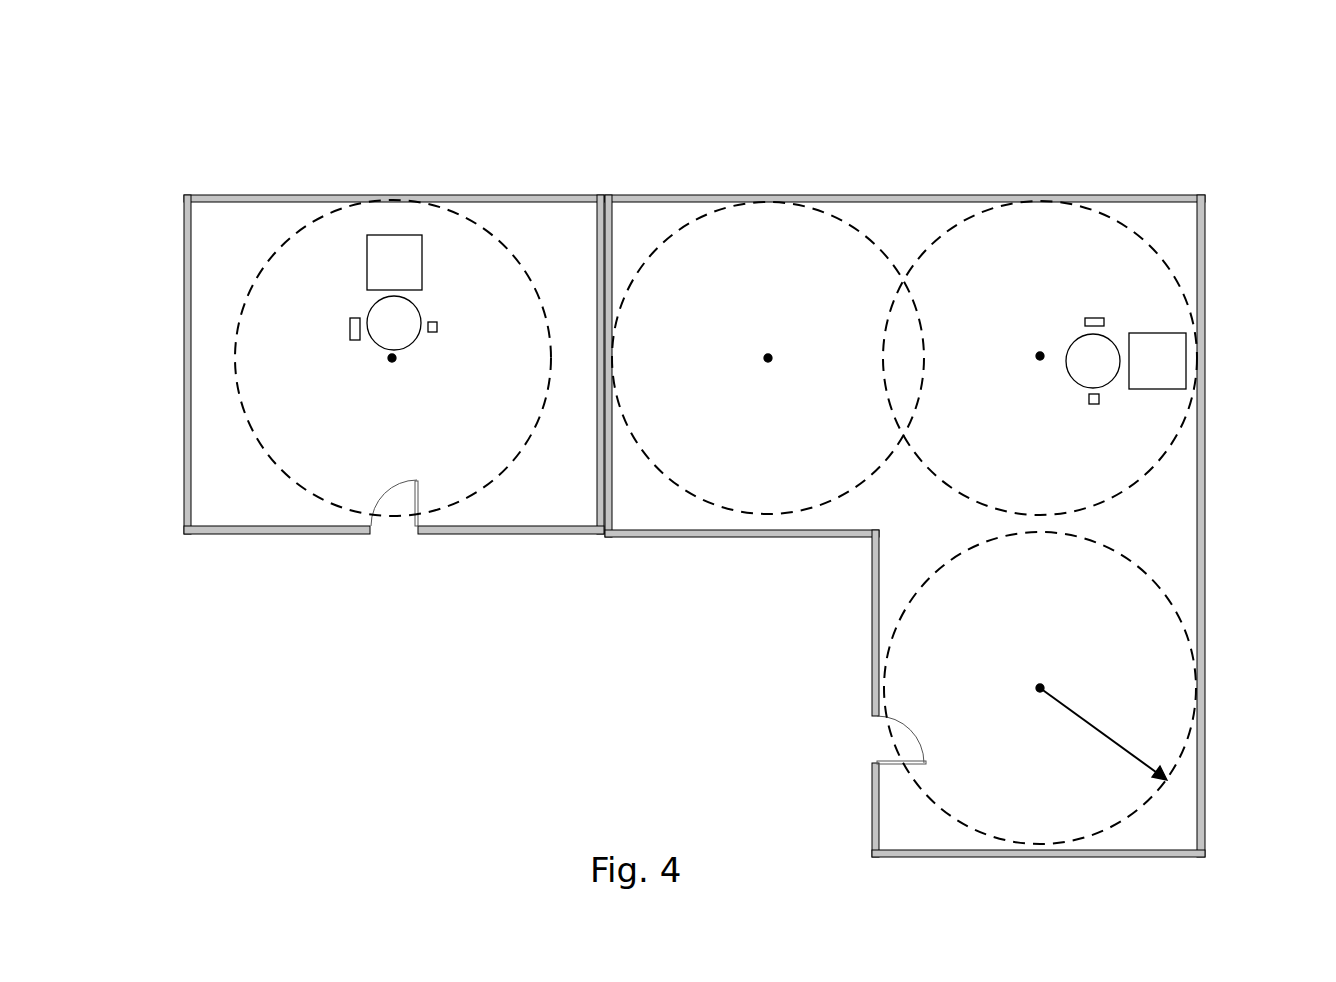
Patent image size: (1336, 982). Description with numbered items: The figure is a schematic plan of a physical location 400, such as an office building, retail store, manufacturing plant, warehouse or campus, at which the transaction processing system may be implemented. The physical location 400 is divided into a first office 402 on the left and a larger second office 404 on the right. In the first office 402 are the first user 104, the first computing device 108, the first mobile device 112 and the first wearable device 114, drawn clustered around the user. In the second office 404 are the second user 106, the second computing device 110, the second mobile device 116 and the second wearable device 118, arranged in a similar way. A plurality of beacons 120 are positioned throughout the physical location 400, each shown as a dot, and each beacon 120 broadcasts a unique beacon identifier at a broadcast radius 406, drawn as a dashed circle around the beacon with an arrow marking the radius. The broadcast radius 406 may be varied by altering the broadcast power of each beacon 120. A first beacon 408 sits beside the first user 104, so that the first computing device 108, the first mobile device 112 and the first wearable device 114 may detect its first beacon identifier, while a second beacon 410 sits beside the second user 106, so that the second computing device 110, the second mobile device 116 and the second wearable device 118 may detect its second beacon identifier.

The physical location 400 is at (398, 72).
The first office 402 is at (290, 195).
The second office 404 is at (915, 195).
The first user 104 is at (368, 307).
The second user 106 is at (1116, 338).
The first computing device 108 is at (422, 268).
The second computing device 110 is at (1186, 373).
The first mobile device 112 is at (352, 330).
The first wearable device 114 is at (438, 327).
The second mobile device 116 is at (1093, 318).
The second wearable device 118 is at (1094, 404).
The first beacon 408 is at (392, 358).
The second beacon 410 is at (1038, 355).
The beacons 120 is at (1040, 688).
The broadcast radius 406 is at (1108, 742).